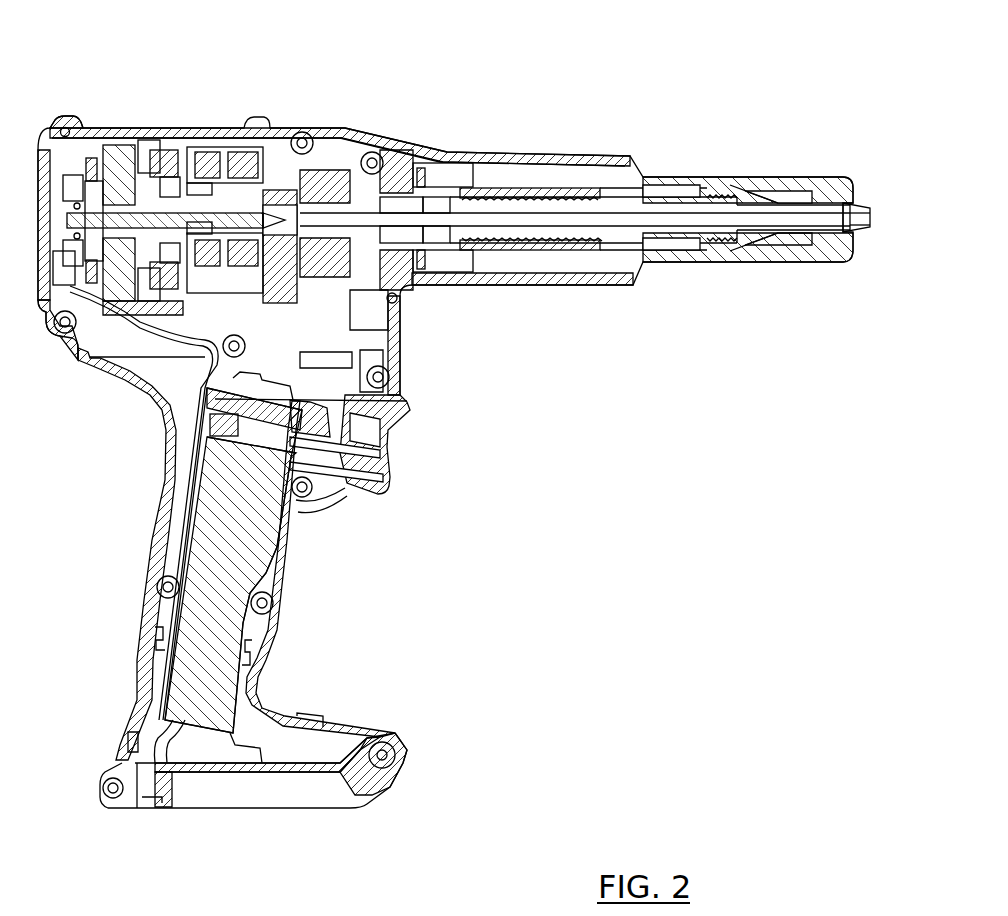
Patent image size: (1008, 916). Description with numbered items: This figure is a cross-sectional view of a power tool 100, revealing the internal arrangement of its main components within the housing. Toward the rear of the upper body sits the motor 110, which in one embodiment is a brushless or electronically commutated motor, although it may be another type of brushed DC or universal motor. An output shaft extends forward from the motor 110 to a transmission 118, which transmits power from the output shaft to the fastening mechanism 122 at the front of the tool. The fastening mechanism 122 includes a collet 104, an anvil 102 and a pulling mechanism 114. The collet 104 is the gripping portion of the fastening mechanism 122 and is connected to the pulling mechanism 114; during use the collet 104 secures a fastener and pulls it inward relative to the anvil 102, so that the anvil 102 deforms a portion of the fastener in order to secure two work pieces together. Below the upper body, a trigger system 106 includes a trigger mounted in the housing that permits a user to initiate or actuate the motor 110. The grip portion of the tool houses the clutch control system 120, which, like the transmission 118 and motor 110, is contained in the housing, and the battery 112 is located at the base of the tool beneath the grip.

The power tool 100 is at (110, 86).
The anvil 102 is at (828, 255).
The collet 104 is at (870, 233).
The trigger system 106 is at (390, 455).
The motor 110 is at (163, 165).
The battery 112 is at (370, 787).
The pulling mechanism 114 is at (505, 190).
The transmission 118 is at (333, 148).
The clutch control system 120 is at (267, 548).
The fastening mechanism 122 is at (810, 150).